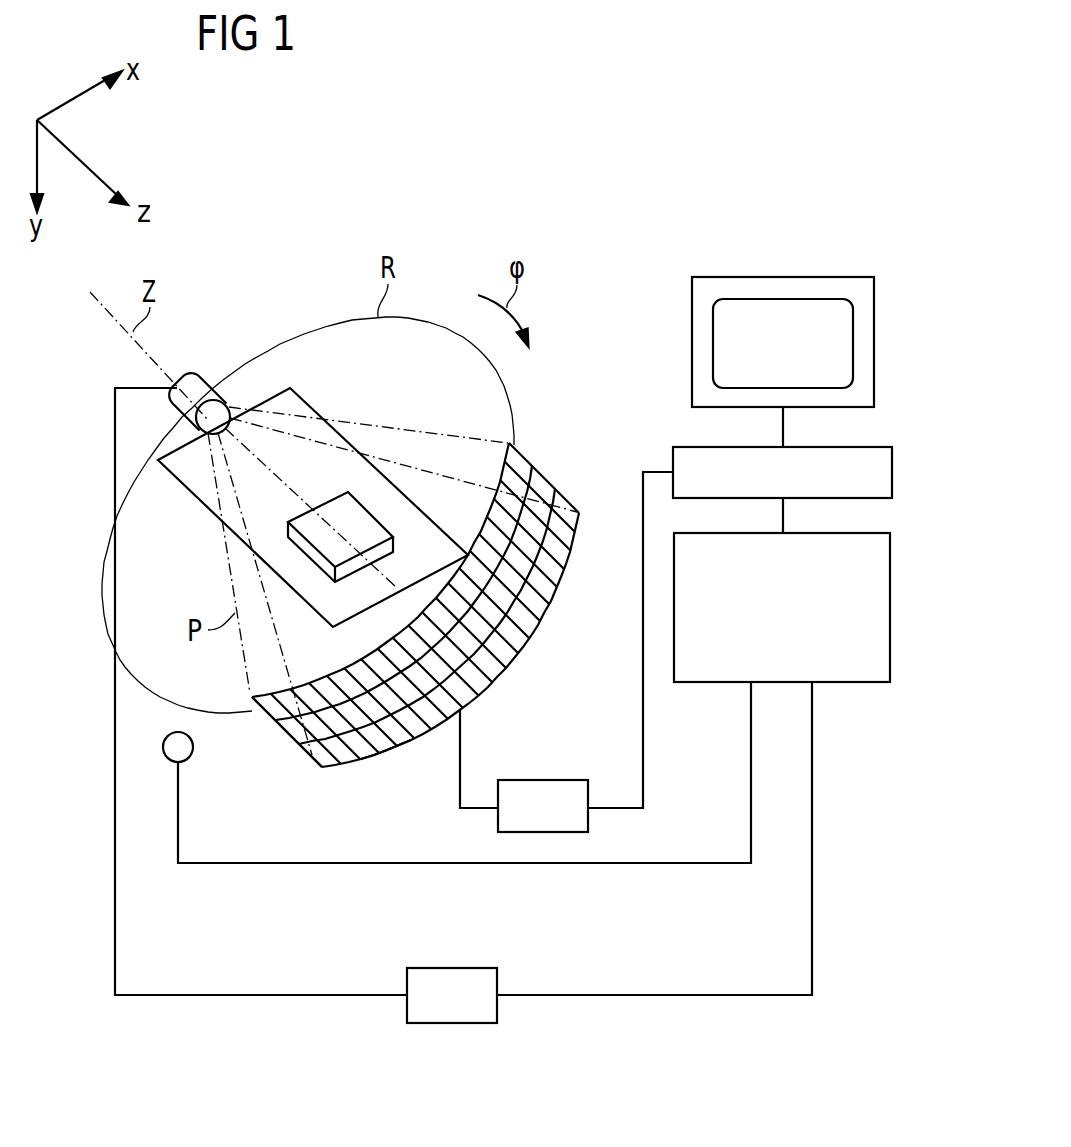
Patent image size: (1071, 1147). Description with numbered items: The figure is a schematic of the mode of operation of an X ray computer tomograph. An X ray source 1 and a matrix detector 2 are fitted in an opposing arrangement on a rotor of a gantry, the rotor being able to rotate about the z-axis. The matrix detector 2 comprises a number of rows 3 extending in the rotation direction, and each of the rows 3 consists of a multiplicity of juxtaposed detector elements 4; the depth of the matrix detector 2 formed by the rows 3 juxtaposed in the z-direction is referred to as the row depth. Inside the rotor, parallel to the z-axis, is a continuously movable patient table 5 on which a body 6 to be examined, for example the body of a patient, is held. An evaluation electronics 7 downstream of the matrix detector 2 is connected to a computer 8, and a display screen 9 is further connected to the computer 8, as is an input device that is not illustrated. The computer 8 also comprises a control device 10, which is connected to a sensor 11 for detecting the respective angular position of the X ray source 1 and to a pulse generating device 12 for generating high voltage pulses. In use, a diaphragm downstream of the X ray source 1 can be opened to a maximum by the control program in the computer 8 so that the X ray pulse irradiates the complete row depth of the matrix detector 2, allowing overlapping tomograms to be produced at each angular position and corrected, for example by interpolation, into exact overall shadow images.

The X ray source 1 is at (200, 378).
The matrix detector 2 is at (500, 622).
The rows 3 is at (313, 758).
The detector elements 4 is at (393, 747).
The patient table 5 is at (198, 487).
The body 6 is at (367, 527).
The evaluation electronics 7 is at (548, 780).
The computer 8 is at (893, 478).
The display screen 9 is at (876, 362).
The control device 10 is at (893, 635).
The sensor 11 is at (195, 750).
The pulse generating device 12 is at (460, 968).